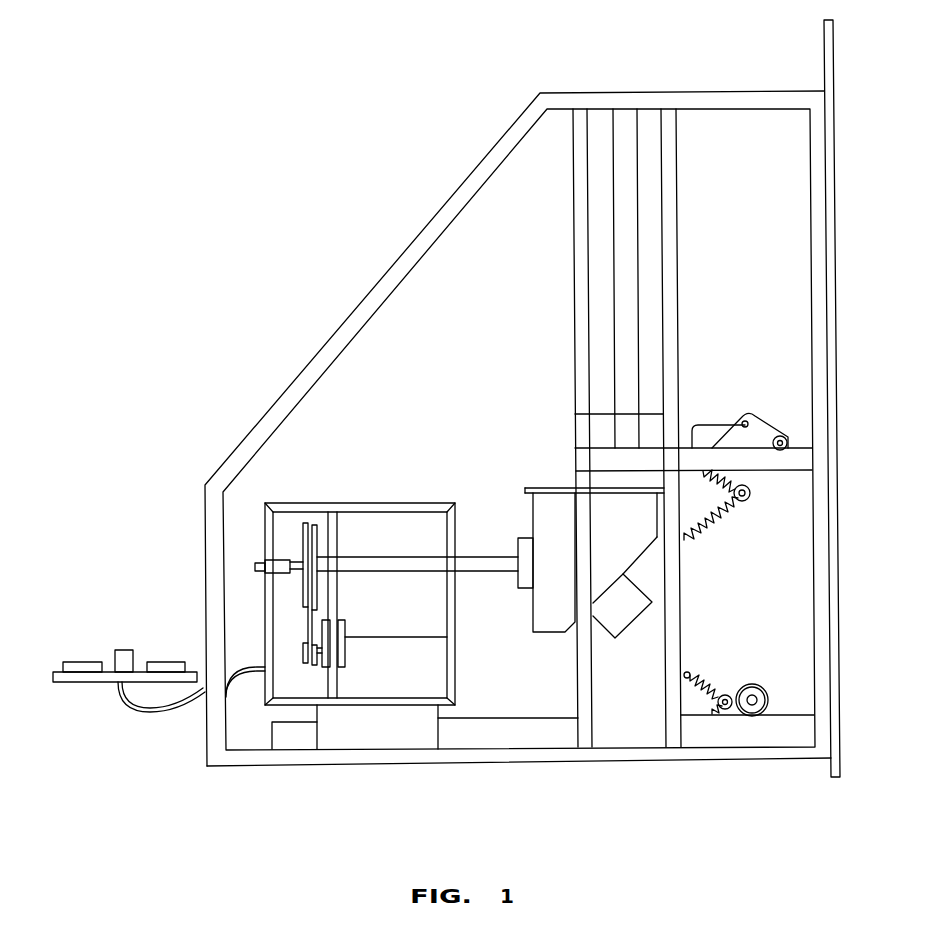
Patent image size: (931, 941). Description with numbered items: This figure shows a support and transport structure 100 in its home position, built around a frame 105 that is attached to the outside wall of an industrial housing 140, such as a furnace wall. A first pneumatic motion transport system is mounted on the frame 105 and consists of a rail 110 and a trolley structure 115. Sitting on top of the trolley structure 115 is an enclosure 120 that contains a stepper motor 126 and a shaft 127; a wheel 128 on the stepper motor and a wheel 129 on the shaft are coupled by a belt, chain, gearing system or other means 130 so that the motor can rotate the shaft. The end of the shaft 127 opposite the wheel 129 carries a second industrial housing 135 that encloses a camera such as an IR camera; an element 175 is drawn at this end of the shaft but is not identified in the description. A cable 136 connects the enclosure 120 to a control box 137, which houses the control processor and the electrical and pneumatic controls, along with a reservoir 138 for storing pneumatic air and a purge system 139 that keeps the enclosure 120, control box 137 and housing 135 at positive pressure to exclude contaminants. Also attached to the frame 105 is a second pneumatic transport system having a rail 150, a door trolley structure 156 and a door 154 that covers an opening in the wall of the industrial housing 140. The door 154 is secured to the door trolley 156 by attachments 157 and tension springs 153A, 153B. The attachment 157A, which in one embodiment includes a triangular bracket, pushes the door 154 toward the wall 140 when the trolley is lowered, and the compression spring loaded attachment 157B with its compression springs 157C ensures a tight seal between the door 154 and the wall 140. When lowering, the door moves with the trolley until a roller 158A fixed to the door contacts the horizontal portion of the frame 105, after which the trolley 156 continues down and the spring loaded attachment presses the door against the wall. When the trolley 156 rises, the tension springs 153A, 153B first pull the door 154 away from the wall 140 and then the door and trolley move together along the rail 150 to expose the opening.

The support and transport structure 100 is at (252, 143).
The frame 105 is at (377, 290).
The rail 110 is at (518, 731).
The trolley structure 115 is at (390, 733).
The enclosure 120 is at (369, 502).
The stepper motor 126 is at (435, 672).
The shaft 127 is at (393, 570).
The wheel 128 is at (306, 657).
The wheel 129 is at (306, 535).
The belt, chain or gearing system 130 is at (305, 634).
The industrial housing 135 is at (543, 605).
The cable 136 is at (155, 712).
The control box 137 is at (167, 662).
The reservoir 138 is at (124, 651).
The purge system 139 is at (85, 662).
The industrial housing 140 is at (836, 395).
The rail 150 is at (622, 283).
The tension spring 153A is at (712, 522).
The tension spring 153B is at (727, 716).
The door 154 is at (793, 432).
The door trolley structure 156 is at (660, 438).
The attachment 157 is at (769, 399).
The attachment 157A is at (757, 442).
The compression spring loaded attachment 157B is at (715, 685).
The compression spring 157C is at (748, 492).
The roller 158A is at (767, 690).
The coupling 175 is at (522, 540).